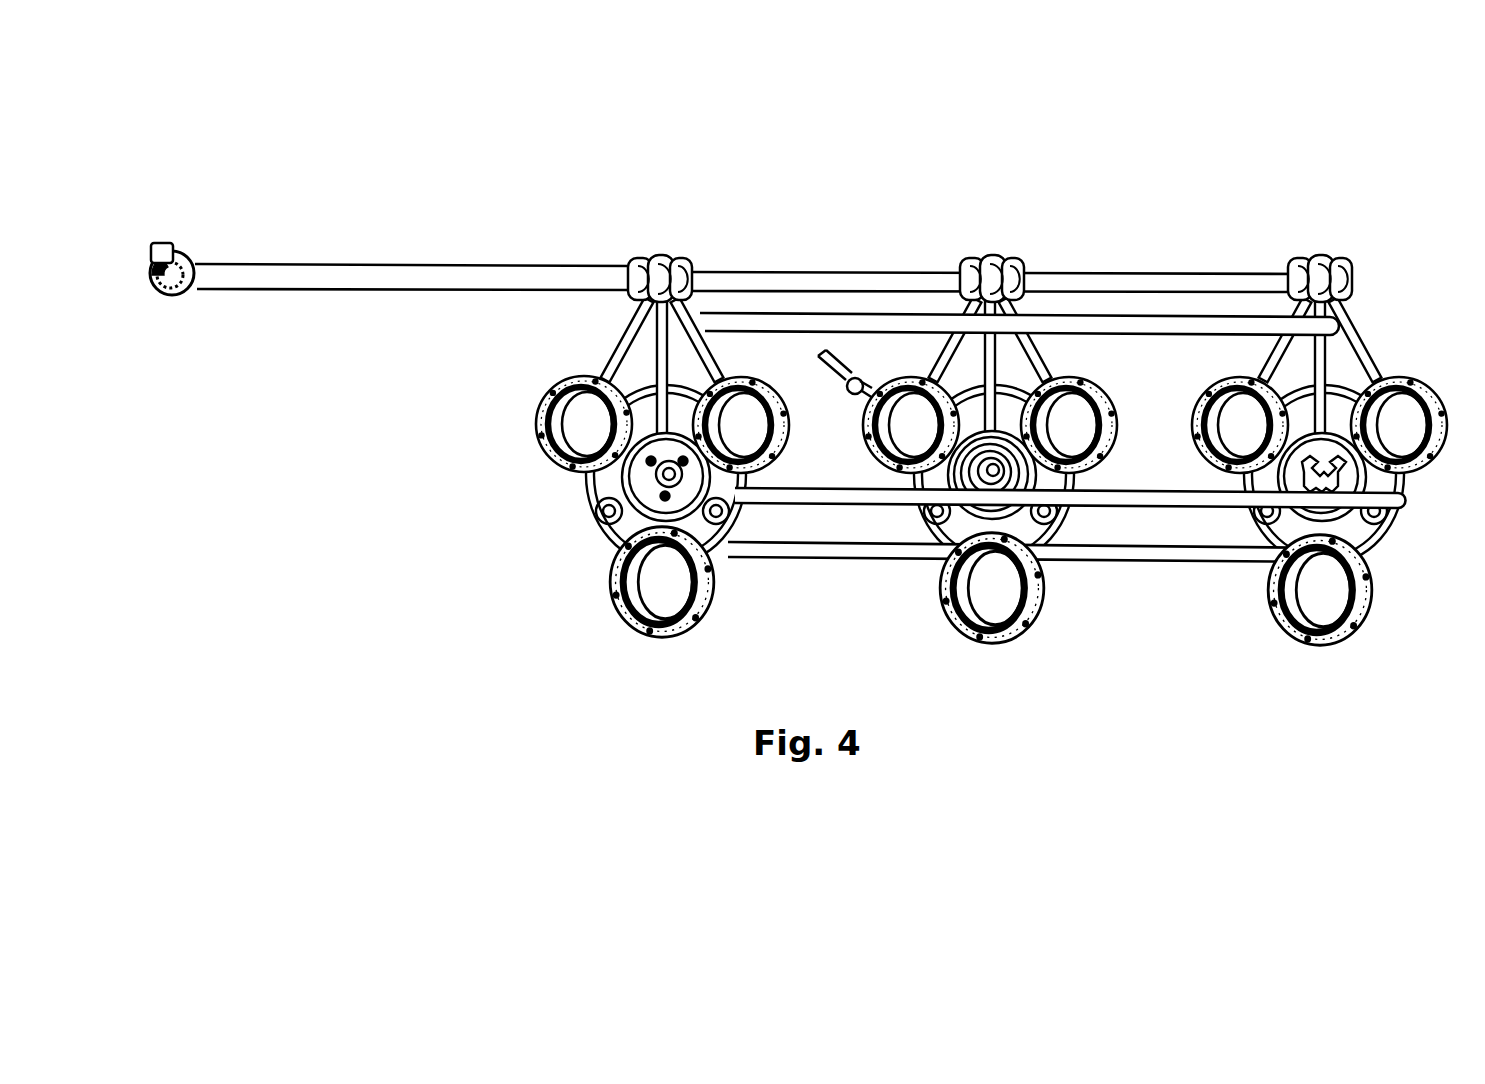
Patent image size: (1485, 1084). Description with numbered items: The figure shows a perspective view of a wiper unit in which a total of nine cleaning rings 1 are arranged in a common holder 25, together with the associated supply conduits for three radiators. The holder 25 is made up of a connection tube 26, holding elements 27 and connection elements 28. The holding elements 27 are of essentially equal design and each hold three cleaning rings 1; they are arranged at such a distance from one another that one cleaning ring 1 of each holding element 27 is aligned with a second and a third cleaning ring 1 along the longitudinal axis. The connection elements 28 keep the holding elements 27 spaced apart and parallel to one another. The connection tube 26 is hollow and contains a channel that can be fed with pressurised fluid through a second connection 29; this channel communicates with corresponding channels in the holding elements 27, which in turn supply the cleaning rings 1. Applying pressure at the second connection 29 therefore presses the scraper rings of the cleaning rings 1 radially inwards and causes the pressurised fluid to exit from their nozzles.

The cleaning ring 1 is at (567, 427).
The holder 25 is at (1168, 227).
The connection tube 26 is at (587, 276).
The holding element 27 is at (702, 330).
The connection element 28 is at (862, 325).
The second connection 29 is at (173, 243).